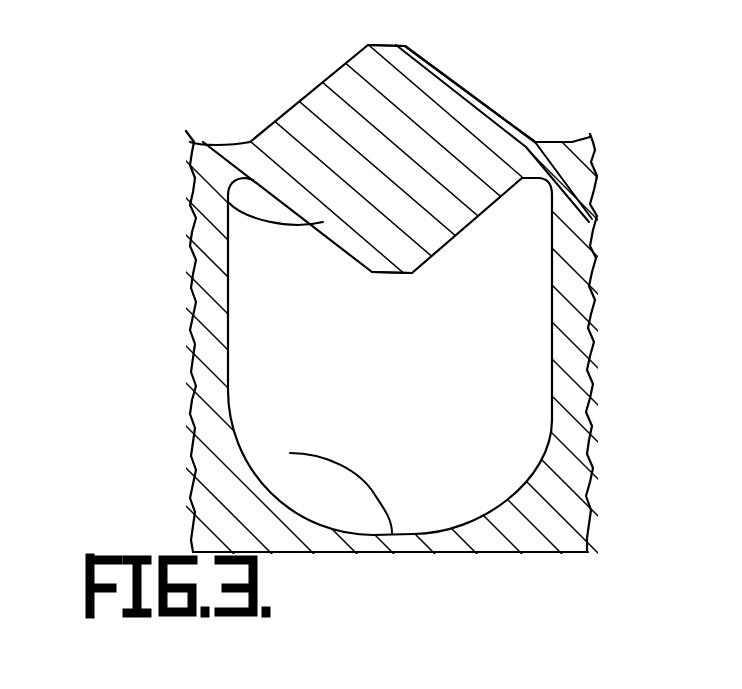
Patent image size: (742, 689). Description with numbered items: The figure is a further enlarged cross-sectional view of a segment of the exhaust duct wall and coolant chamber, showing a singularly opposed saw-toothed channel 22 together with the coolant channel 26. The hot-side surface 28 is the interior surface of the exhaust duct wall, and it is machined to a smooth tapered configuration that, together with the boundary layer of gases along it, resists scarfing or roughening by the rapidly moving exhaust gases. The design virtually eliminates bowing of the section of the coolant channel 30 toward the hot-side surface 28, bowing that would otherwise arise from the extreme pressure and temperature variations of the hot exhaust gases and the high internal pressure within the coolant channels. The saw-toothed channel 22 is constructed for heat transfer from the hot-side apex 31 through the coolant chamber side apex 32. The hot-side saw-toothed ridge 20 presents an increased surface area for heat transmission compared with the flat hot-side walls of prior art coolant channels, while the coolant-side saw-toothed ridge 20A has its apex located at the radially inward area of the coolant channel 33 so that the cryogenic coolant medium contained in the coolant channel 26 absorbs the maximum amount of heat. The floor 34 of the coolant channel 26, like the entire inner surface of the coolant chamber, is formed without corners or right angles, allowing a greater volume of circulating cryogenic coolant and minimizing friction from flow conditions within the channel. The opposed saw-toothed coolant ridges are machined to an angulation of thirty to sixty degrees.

The hot-side saw-toothed ridge 20 is at (323, 90).
The coolant-side saw-toothed ridge 20A is at (192, 157).
The singularly opposed saw-toothed channel 22 is at (606, 226).
The coolant channel 26 is at (497, 390).
The hot-side surface 28 is at (467, 83).
The section of the coolant channel 30 is at (393, 163).
The hot-side apex 31 is at (388, 38).
The coolant chamber side apex 32 is at (390, 275).
The coolant channel 33 is at (393, 308).
The floor 34 is at (290, 453).